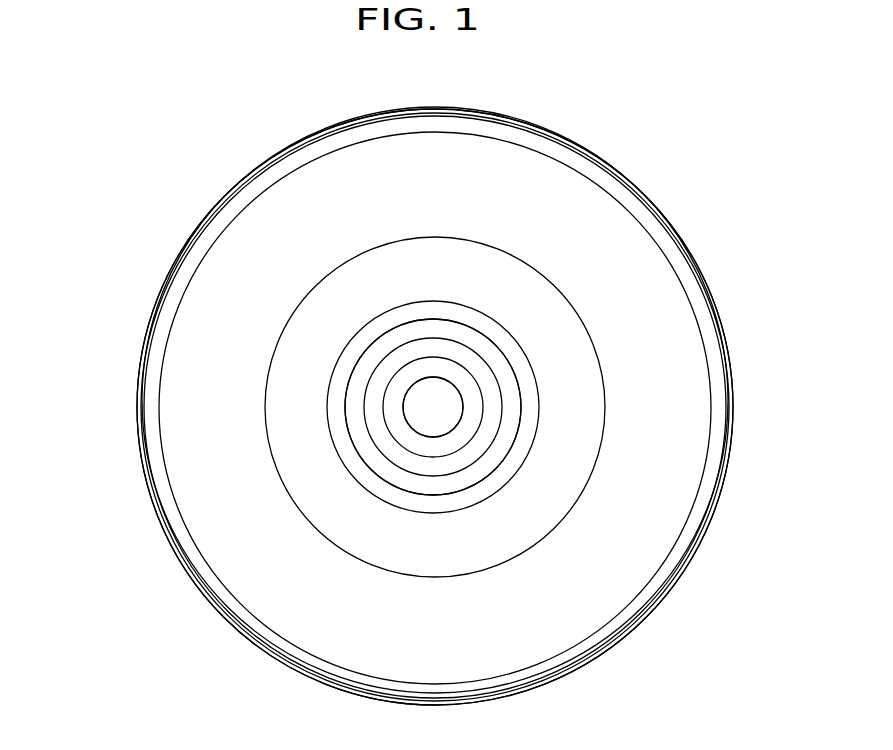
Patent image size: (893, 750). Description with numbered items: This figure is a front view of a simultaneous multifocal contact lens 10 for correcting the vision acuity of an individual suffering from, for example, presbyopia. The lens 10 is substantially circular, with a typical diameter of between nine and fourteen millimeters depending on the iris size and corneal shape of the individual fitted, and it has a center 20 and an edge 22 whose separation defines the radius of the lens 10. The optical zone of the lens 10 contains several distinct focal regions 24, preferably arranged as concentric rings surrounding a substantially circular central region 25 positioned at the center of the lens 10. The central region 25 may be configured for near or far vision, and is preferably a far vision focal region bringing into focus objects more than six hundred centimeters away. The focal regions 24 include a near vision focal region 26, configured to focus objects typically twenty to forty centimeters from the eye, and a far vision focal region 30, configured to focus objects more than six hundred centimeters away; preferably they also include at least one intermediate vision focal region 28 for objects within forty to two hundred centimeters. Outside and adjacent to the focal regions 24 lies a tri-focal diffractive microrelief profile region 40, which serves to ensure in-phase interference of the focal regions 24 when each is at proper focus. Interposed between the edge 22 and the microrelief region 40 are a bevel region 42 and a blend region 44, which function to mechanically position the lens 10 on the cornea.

The lens 10 is at (450, 86).
The center 20 is at (438, 404).
The edge 22 is at (433, 708).
The focal regions 24 is at (433, 443).
The central region 25 is at (433, 407).
The near vision focal region 26 is at (492, 433).
The intermediate vision focal region 28 is at (476, 412).
The far vision focal region 30 is at (540, 508).
The tri-focal diffractive microrelief profile region 40 is at (433, 632).
The bevel region 42 is at (433, 691).
The blend region 44 is at (433, 700).